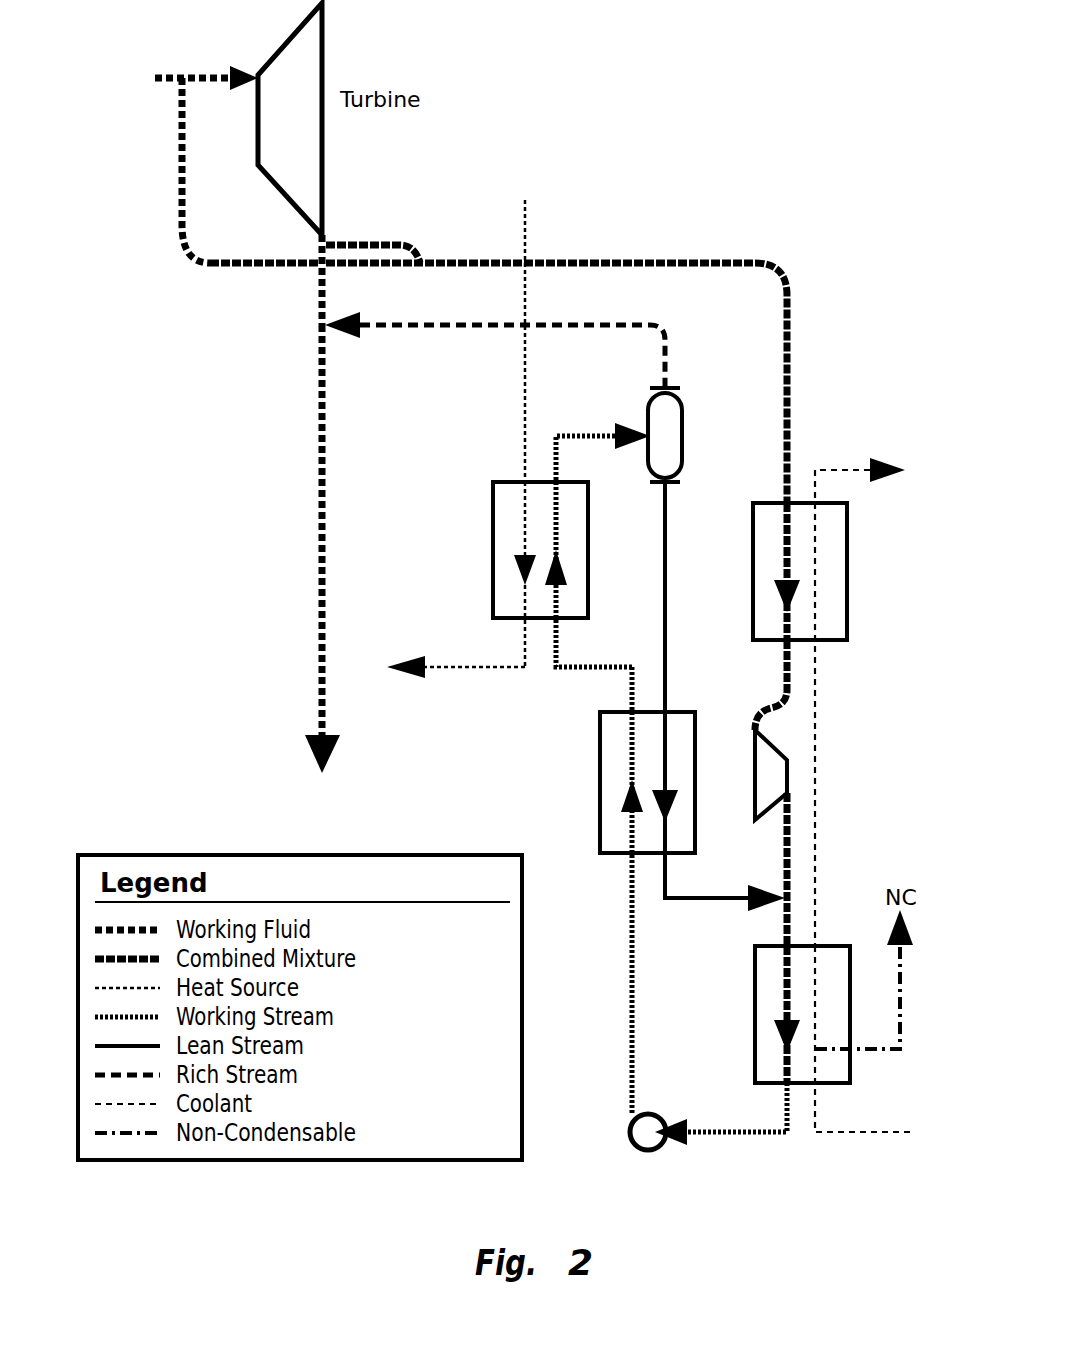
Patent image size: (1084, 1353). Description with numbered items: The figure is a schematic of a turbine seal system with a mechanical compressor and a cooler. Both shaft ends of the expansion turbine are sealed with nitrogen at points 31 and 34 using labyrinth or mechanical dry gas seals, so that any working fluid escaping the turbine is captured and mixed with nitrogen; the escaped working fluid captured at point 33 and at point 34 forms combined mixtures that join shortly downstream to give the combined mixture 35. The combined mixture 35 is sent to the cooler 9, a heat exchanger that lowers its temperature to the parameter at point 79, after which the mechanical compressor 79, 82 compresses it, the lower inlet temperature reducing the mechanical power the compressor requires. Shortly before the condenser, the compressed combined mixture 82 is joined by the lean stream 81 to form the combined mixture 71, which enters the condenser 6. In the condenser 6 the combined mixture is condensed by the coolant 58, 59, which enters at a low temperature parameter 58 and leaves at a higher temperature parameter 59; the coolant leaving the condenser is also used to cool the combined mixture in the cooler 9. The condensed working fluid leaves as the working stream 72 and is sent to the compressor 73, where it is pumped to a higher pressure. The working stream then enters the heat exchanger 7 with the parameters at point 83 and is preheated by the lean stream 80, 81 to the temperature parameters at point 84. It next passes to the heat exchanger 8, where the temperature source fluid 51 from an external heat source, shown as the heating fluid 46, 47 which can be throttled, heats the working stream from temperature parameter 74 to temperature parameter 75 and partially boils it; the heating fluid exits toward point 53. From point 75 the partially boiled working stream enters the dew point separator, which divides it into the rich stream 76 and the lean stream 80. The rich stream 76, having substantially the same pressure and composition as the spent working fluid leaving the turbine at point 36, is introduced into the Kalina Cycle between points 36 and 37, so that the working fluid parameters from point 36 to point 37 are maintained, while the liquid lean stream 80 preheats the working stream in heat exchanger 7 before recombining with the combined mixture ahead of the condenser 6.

The condenser 6 is at (802, 1014).
The heat exchanger 7 is at (647, 782).
The heat exchanger 8 is at (540, 550).
The cooler 9 is at (800, 571).
The expansion turbine sealing point 31 is at (207, 64).
The combined mixture point 33 is at (250, 170).
The expansion turbine sealing point 34 is at (373, 241).
The combined mixture 35 is at (556, 383).
The turbine exit point of working fluid 36 is at (301, 280).
The working fluid point 37 is at (310, 549).
The heating fluid 46 is at (509, 516).
The heating fluid 47 is at (502, 626).
The temperature source fluid 51 is at (518, 327).
The heat source stream outlet 53 is at (456, 678).
The coolant 58 is at (862, 1039).
The coolant 59 is at (860, 702).
The combined mixture 71 is at (780, 997).
The working stream 72 is at (721, 1114).
The compressor 73 is at (627, 1121).
The temperature parameter 74 is at (588, 608).
The temperature parameter 75 is at (603, 504).
The rich stream 76 is at (503, 397).
The combined mixture point 79 is at (767, 685).
The lean stream 80 is at (651, 652).
The lean stream 81 is at (725, 863).
The combined mixture point 82 is at (768, 869).
The working stream parameters 83 is at (610, 962).
The temperature parameters 84 is at (616, 739).